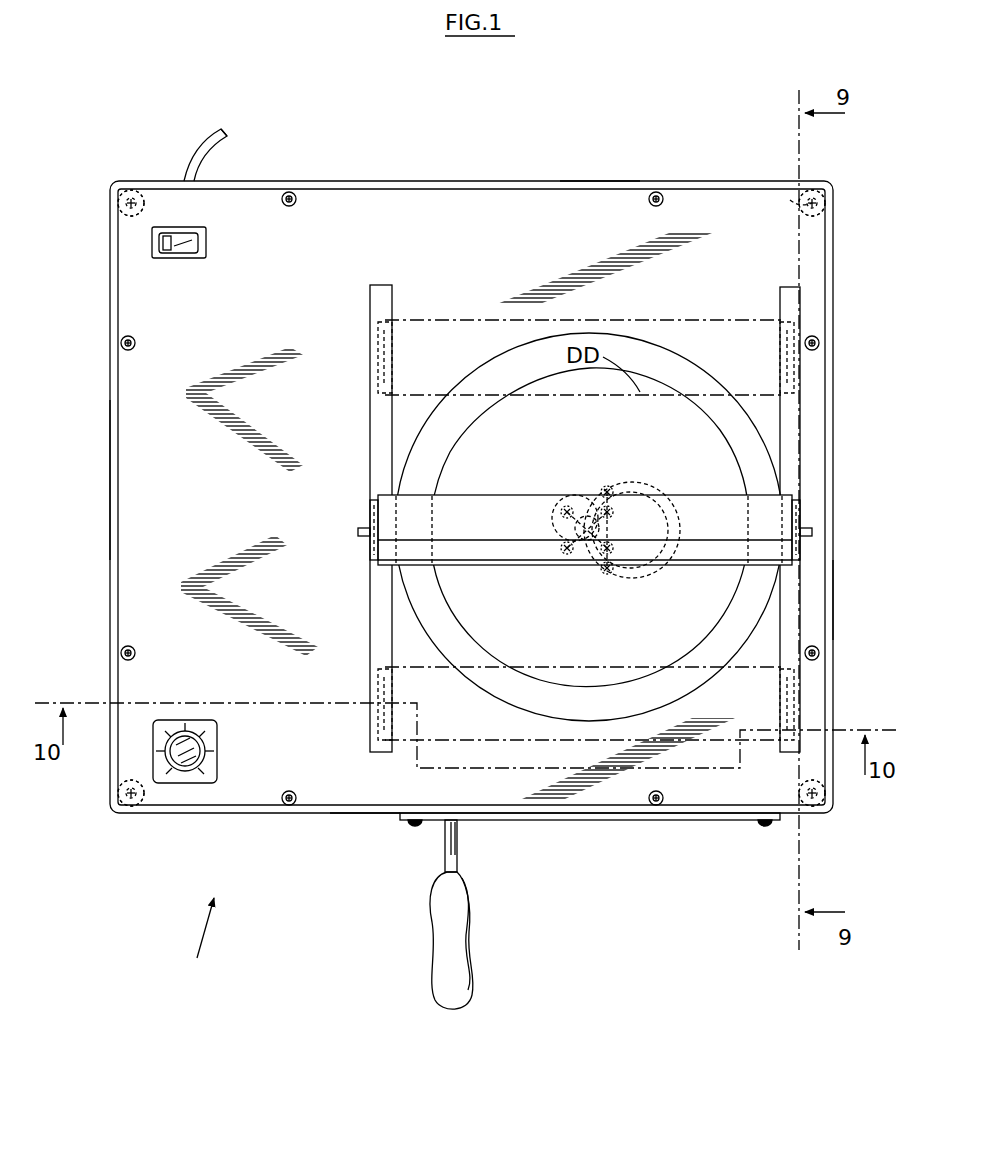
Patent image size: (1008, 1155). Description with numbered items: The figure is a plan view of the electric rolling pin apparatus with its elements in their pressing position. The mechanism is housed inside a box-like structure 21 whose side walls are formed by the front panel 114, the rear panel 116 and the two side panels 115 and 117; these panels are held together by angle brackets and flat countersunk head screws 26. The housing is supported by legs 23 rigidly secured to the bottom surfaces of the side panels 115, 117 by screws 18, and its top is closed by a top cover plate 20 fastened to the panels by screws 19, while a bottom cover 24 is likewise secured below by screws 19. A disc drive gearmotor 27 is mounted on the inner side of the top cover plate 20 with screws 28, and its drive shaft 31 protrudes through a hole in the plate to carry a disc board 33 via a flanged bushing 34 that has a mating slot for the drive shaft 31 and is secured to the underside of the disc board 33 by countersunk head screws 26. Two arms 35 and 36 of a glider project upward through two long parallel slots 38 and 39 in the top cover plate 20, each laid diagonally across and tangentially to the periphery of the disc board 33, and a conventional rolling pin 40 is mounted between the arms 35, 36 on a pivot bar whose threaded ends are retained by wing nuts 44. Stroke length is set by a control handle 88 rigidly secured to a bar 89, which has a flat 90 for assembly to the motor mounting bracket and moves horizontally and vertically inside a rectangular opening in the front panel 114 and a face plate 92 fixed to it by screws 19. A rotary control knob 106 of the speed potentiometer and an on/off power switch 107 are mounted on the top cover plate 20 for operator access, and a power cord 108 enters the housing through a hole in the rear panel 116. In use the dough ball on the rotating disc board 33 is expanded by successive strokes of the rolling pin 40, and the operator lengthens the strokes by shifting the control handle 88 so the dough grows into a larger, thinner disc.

The screws 18 is at (120, 205).
The screws 19 is at (289, 192).
The top cover plate 20 is at (128, 553).
The box-like structure 21 is at (190, 941).
The legs 23 is at (133, 190).
The bottom cover 24 is at (795, 199).
The flat countersunk head screws 26 is at (560, 514).
The disc drive gearmotor 27 is at (637, 490).
The screws 28 is at (607, 486).
The drive shaft 31 is at (584, 517).
The disc board 33 is at (682, 376).
The flanged bushing 34 is at (572, 496).
The arm 35 is at (372, 380).
The arm 36 is at (796, 380).
The slot 38 is at (370, 432).
The slot 39 is at (800, 440).
The rolling pin 40 is at (425, 320).
The wing nuts 44 is at (358, 532).
The control handle 88 is at (472, 965).
The bar 89 is at (457, 838).
The flat 90 is at (458, 866).
The face plate 92 is at (600, 821).
The rotary control knob 106 is at (185, 740).
The ON/OFF power switch 107 is at (206, 247).
The power cord 108 is at (212, 132).
The front panel 114 is at (358, 816).
The side panel 115 is at (833, 606).
The rear panel 116 is at (600, 190).
The side panel 117 is at (110, 473).